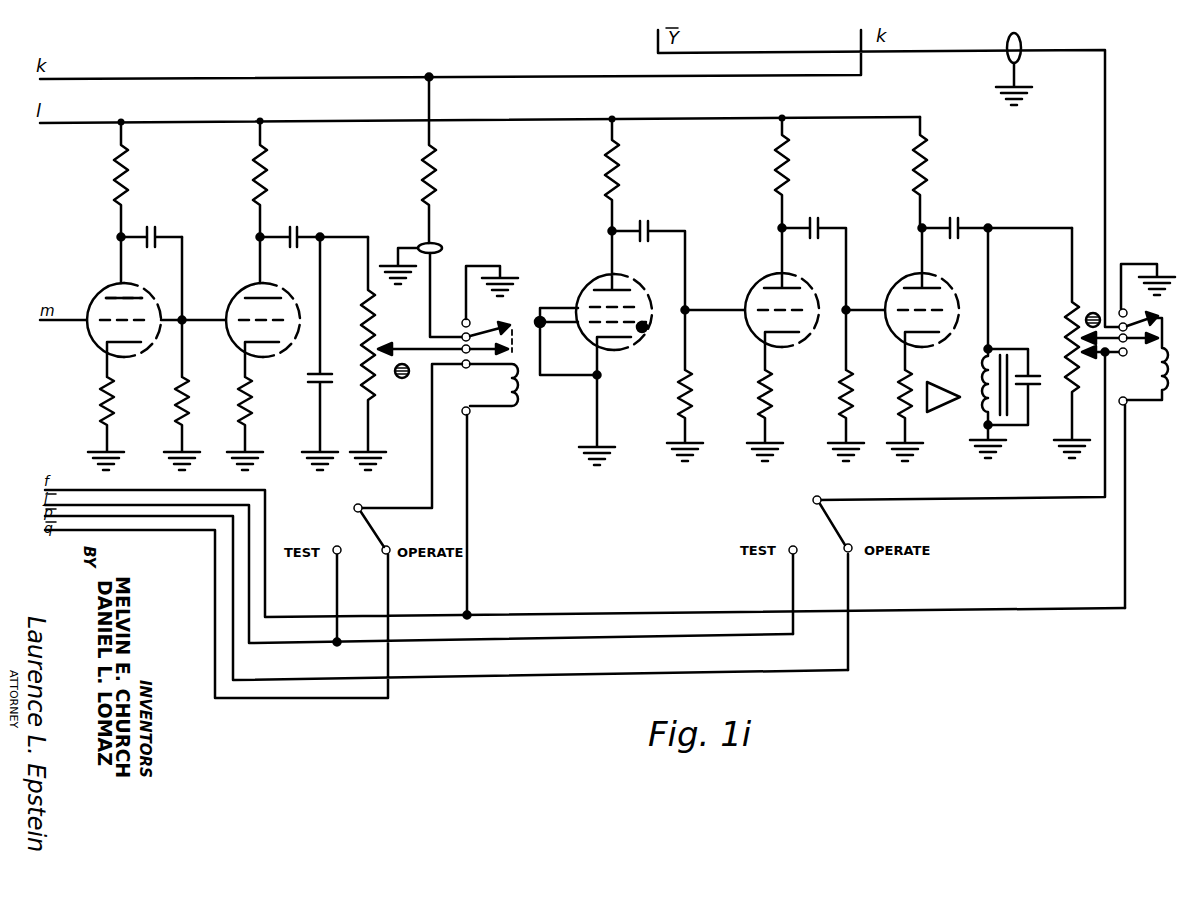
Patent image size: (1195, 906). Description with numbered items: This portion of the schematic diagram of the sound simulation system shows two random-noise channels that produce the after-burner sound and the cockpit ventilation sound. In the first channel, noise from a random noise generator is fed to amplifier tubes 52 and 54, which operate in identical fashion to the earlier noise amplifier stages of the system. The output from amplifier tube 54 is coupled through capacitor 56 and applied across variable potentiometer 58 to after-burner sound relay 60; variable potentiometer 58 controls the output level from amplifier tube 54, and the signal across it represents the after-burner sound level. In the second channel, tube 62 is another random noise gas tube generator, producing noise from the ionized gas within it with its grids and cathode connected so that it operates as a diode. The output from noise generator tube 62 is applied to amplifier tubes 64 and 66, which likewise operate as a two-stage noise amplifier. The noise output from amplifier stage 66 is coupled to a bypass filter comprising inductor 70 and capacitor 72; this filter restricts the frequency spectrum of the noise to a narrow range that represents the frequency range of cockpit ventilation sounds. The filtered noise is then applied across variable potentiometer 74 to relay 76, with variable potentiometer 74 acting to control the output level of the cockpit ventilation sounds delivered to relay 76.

The amplifier tube 52 is at (113, 352).
The amplifier tube 54 is at (252, 352).
The capacitor 56 is at (298, 238).
The variable potentiometer 58 is at (380, 326).
The after-burner sound relay 60 is at (520, 402).
The random noise gas tube generator 62 is at (602, 280).
The amplifier tube 64 is at (770, 278).
The amplifier tube 66 is at (908, 280).
The inductor 70 is at (984, 366).
The capacitor 72 is at (1032, 374).
The variable potentiometer 74 is at (1068, 324).
The relay 76 is at (1160, 404).